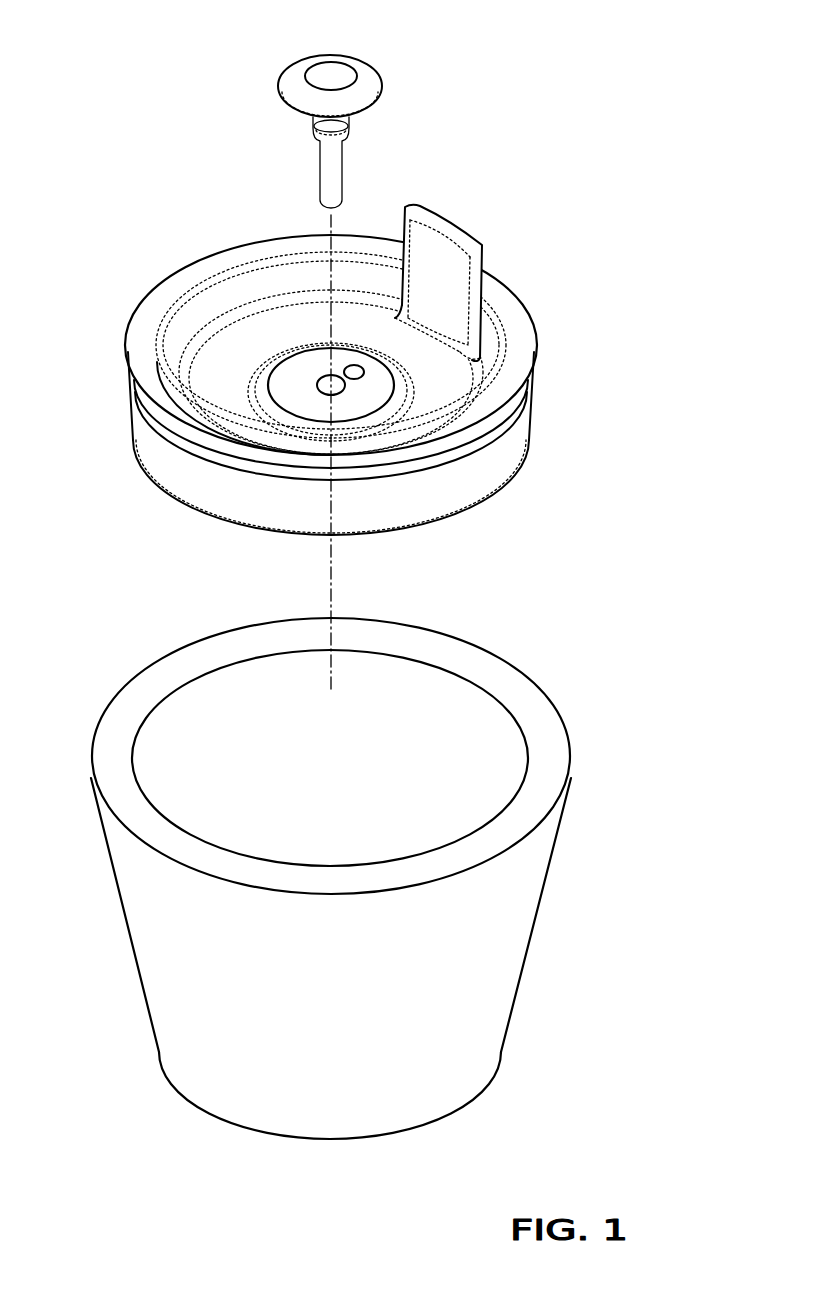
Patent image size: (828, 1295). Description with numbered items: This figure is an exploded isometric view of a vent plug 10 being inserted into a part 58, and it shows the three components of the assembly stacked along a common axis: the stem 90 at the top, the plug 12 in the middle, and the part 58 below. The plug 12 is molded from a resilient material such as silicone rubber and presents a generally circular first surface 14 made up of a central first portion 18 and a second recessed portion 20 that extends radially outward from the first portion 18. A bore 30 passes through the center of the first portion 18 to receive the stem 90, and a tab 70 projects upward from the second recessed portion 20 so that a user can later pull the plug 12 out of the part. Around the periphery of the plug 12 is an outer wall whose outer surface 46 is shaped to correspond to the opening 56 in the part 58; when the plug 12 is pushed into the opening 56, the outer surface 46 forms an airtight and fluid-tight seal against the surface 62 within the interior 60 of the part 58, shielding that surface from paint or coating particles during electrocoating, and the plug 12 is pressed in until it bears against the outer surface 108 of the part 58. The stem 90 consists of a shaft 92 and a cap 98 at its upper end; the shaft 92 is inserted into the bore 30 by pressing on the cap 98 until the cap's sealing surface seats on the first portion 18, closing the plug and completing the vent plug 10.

The vent plug 10 is at (513, 178).
The plug 12 is at (324, 356).
The first surface 14 is at (450, 393).
The first portion 18 is at (302, 367).
The second recessed portion 20 is at (218, 340).
The bore 30 is at (343, 388).
The outer surface 46 is at (160, 450).
The opening 56 is at (472, 678).
The part 58 is at (375, 857).
The interior 60 is at (272, 734).
The surface 62 is at (190, 698).
The tab 70 is at (470, 222).
The stem 90 is at (331, 107).
The shaft 92 is at (318, 168).
The cap 98 is at (363, 73).
The outer surface 108 is at (532, 710).